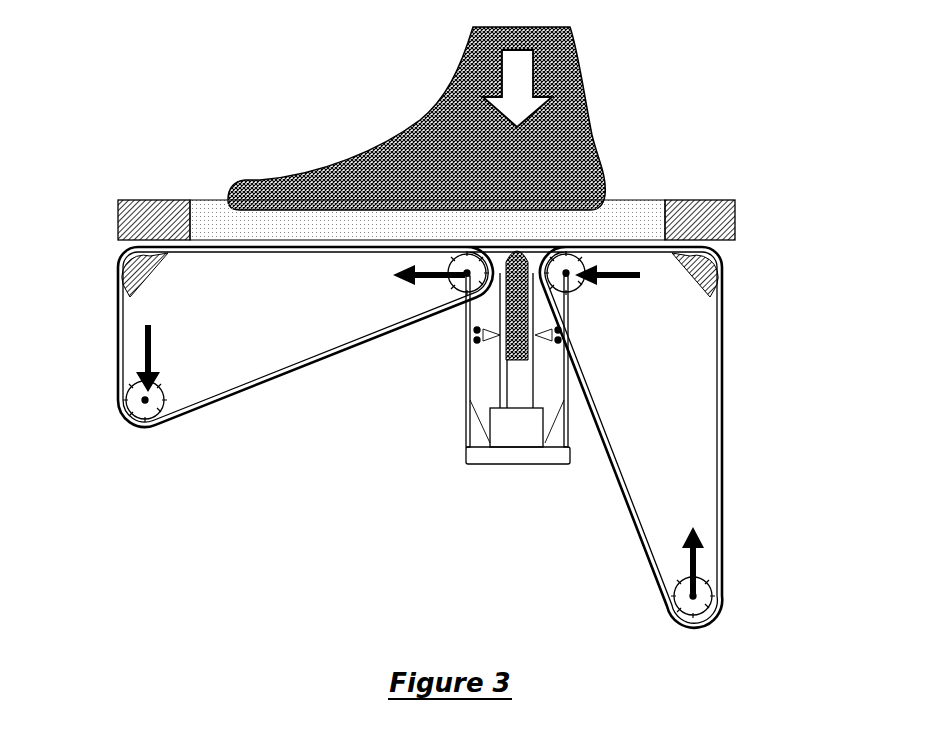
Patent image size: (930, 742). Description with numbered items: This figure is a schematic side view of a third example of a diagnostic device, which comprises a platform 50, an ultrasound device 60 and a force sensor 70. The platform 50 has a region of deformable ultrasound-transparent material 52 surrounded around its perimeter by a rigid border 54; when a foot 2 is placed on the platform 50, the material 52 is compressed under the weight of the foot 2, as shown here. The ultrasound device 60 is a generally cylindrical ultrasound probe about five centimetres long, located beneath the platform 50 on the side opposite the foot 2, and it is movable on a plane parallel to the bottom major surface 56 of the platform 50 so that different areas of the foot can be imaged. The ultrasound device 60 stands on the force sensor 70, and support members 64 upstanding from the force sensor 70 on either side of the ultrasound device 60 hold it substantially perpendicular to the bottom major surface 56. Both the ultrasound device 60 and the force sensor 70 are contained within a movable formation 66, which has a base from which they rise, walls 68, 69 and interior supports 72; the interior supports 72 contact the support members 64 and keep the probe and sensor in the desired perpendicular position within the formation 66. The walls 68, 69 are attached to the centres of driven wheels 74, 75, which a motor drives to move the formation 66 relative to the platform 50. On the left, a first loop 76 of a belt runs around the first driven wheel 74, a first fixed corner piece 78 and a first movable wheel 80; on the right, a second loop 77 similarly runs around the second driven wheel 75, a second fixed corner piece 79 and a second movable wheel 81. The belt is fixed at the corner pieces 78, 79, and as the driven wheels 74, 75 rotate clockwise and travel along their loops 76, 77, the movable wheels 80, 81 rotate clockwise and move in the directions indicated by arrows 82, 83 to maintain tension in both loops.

The foot 2 is at (430, 95).
The platform 50 is at (190, 200).
The region of deformable ultrasound-transparent material 52 is at (627, 215).
The rigid border 54 is at (707, 210).
The bottom major surface 56 is at (122, 252).
The ultrasound device 60 is at (520, 248).
The support members 64 is at (503, 362).
The movable formation 66 is at (488, 467).
The wall 68 is at (463, 425).
The wall 69 is at (568, 415).
The force sensor 70 is at (515, 430).
The interior supports 72 is at (560, 345).
The driven wheel 74 is at (453, 295).
The driven wheel 75 is at (577, 297).
The first loop of belt 76 is at (210, 410).
The second loop of belt 77 is at (722, 490).
The first fixed corner piece 78 is at (123, 287).
The second fixed corner piece 79 is at (722, 265).
The first movable wheel 80 is at (135, 405).
The second movable wheel 81 is at (705, 600).
The arrow 82 is at (142, 360).
The arrow 83 is at (700, 565).